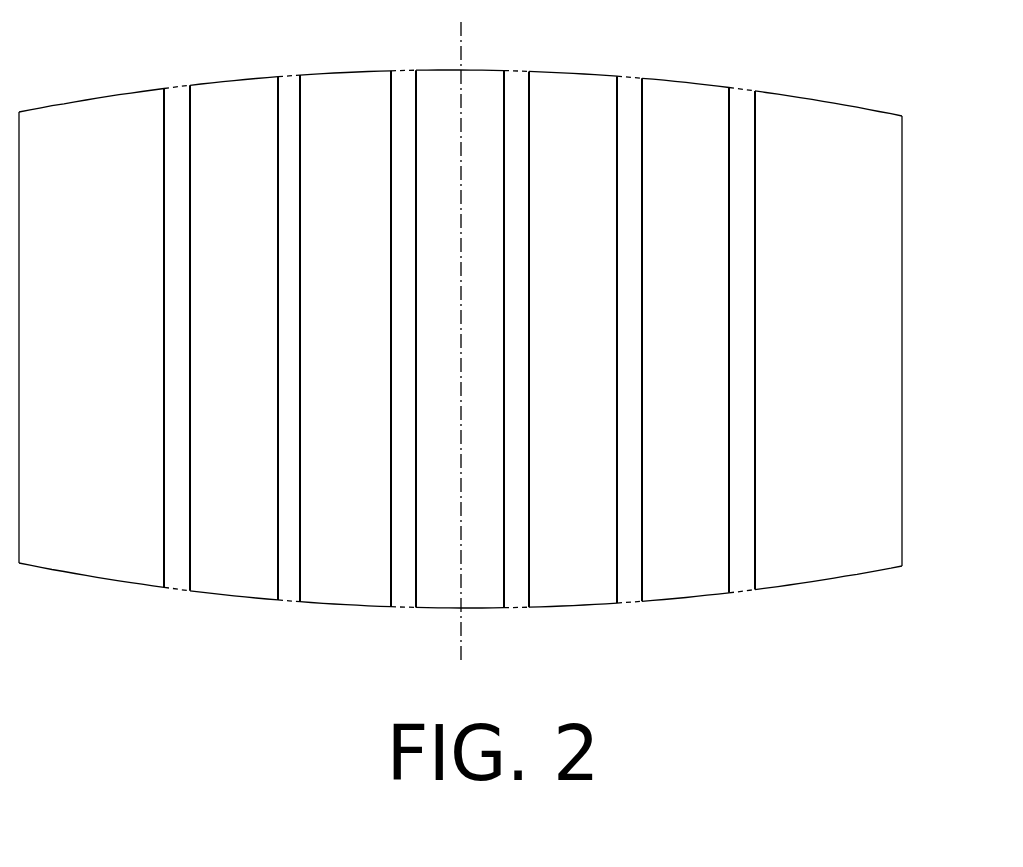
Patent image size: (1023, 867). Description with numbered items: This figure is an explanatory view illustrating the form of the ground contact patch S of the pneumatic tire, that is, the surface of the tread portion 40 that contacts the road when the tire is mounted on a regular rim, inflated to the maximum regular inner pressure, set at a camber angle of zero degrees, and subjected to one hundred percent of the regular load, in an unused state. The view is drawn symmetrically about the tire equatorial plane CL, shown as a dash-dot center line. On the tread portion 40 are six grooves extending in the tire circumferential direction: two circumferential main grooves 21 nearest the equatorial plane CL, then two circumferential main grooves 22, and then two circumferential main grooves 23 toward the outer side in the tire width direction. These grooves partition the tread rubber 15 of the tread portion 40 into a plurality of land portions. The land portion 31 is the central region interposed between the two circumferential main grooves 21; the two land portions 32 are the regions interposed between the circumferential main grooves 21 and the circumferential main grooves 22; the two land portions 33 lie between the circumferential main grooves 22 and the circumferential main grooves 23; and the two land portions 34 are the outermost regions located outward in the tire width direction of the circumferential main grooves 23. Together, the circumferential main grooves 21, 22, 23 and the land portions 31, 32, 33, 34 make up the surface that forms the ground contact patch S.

The ground contact patch S is at (879, 228).
The tread portion 40 is at (925, 425).
The tire equatorial plane CL is at (463, 52).
The tread rubber 15 is at (712, 578).
The land portion 31 is at (432, 80).
The circumferential main groove 21 is at (400, 84).
The land portion 32 is at (344, 82).
The circumferential main groove 22 is at (288, 85).
The land portion 33 is at (228, 93).
The circumferential main groove 23 is at (172, 100).
The land portion 34 is at (90, 110).